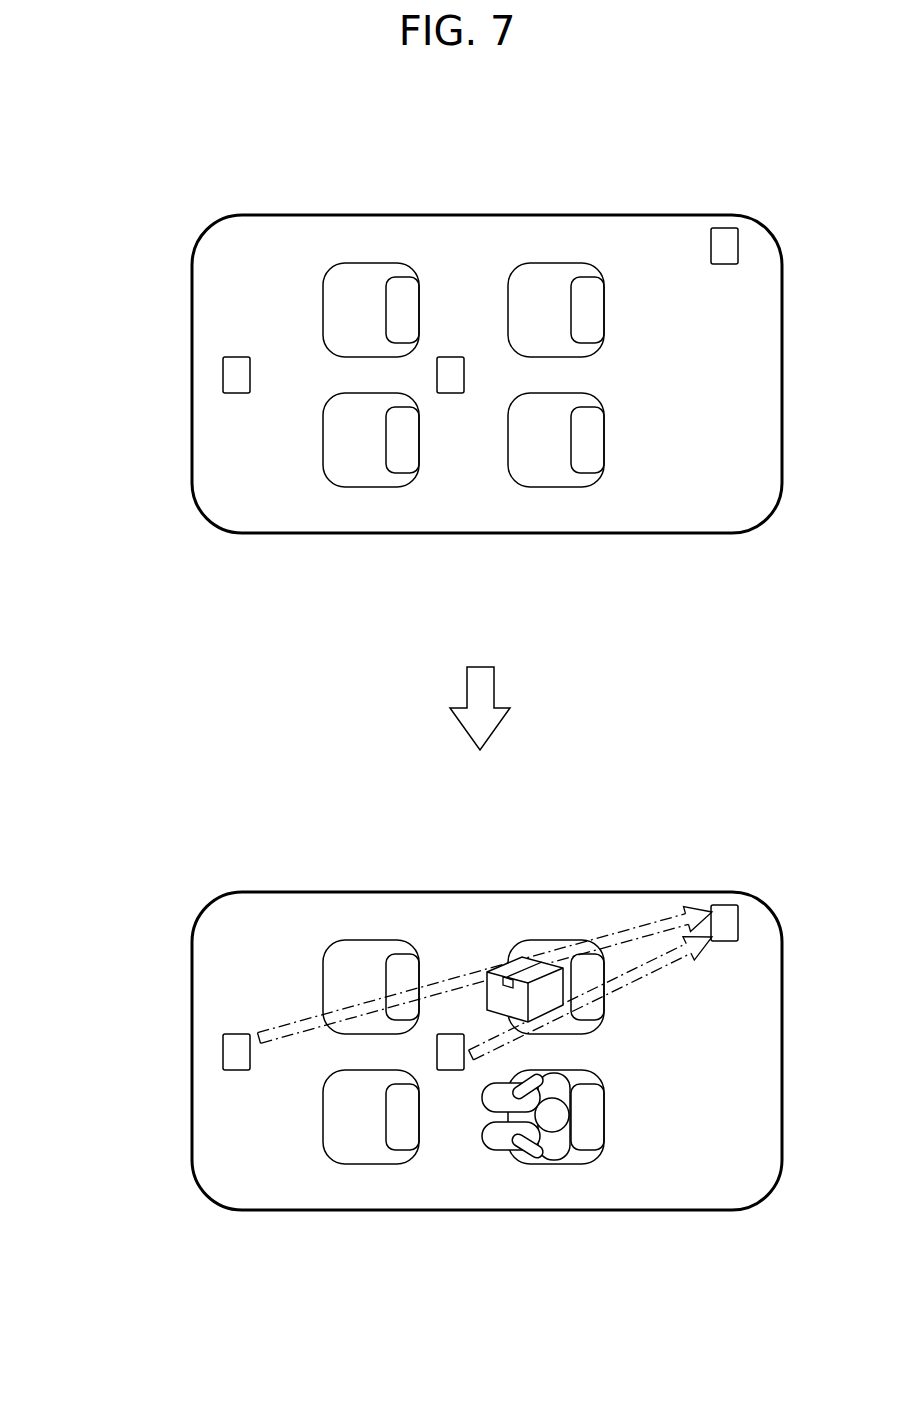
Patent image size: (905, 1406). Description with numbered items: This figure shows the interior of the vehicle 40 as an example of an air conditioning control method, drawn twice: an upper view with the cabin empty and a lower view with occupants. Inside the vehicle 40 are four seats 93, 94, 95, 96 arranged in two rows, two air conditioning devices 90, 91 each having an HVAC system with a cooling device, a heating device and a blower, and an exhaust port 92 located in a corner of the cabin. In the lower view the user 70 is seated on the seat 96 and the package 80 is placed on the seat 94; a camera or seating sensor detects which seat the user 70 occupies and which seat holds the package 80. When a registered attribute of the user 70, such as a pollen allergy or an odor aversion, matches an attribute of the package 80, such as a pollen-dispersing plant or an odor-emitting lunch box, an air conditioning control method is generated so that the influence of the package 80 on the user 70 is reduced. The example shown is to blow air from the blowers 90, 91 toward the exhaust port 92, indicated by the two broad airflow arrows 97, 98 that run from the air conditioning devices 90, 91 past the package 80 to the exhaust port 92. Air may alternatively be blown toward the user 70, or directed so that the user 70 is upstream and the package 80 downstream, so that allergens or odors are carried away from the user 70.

The vehicle 40 is at (192, 375).
The user 70 is at (540, 1163).
The package 80 is at (497, 968).
The air conditioning device 90 is at (240, 357).
The air conditioning device 91 is at (452, 357).
The exhaust port 92 is at (725, 228).
The seat 93 is at (374, 263).
The seat 94 is at (556, 263).
The seat 95 is at (370, 487).
The seat 96 is at (548, 487).
The transmission direction 97 is at (632, 928).
The transmission direction 98 is at (652, 975).